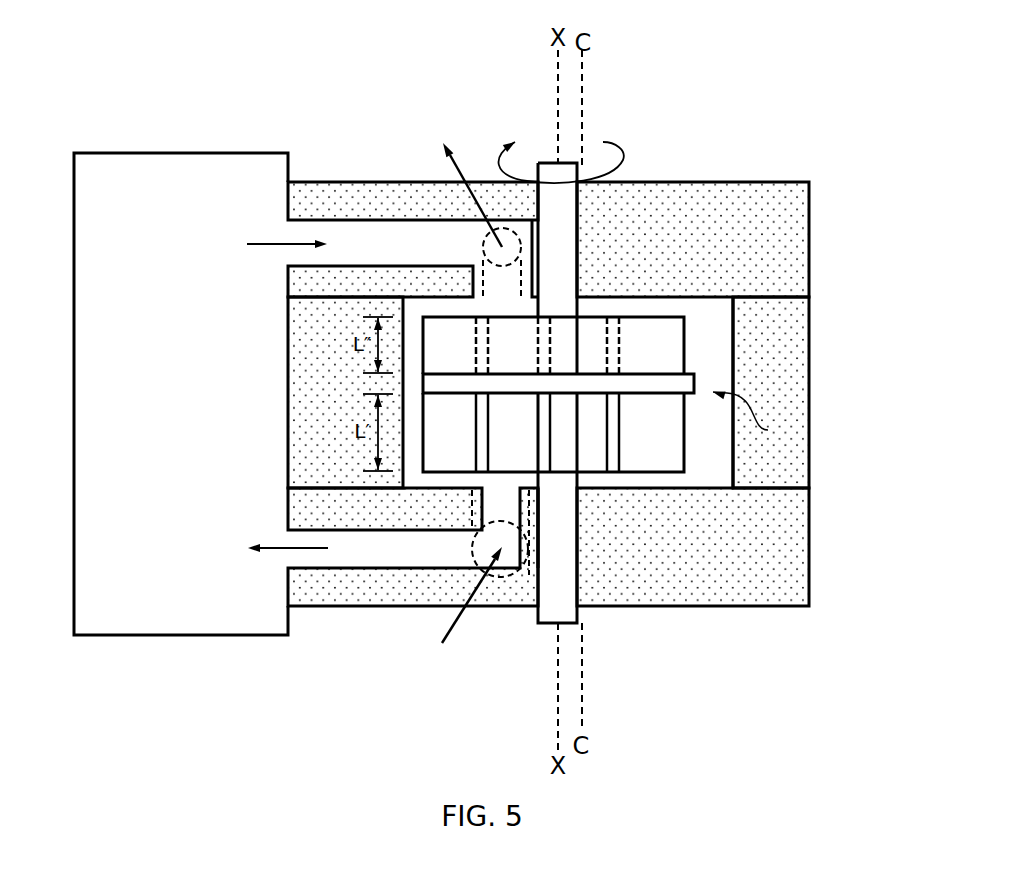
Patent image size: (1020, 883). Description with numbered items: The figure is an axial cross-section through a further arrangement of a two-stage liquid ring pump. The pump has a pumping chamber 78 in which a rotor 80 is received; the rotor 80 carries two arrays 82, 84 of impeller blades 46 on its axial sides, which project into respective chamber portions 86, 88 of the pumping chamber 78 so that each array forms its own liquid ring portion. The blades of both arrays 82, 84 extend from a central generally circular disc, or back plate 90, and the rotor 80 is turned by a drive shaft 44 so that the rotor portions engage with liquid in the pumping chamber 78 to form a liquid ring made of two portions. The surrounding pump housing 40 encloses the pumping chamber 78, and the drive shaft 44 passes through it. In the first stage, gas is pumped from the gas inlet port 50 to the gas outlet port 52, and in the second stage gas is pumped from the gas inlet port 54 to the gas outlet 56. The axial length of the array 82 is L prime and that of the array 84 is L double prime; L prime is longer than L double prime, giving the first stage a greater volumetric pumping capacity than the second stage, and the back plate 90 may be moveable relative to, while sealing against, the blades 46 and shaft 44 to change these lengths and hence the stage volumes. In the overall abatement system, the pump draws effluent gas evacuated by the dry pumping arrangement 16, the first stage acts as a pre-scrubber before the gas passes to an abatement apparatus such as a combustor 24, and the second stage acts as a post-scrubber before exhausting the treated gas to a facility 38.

The dry pumping arrangement 16 is at (453, 630).
The combustor 24 is at (166, 408).
The facility 38 is at (448, 163).
The housing 40 is at (777, 387).
The drive shaft 44 is at (558, 210).
The impeller blades 46 is at (482, 345).
The gas inlet port 50 is at (535, 500).
The gas outlet port 52 is at (532, 511).
The gas inlet port 54 is at (533, 287).
The gas outlet 56 is at (522, 272).
The pumping chamber 78 is at (733, 452).
The rotor 80 is at (757, 420).
The array of impeller blades 82 is at (653, 459).
The array of impeller blades 84 is at (652, 345).
The chamber portion 86 is at (713, 323).
The chamber portion 88 is at (703, 470).
The back plate 90 is at (695, 383).